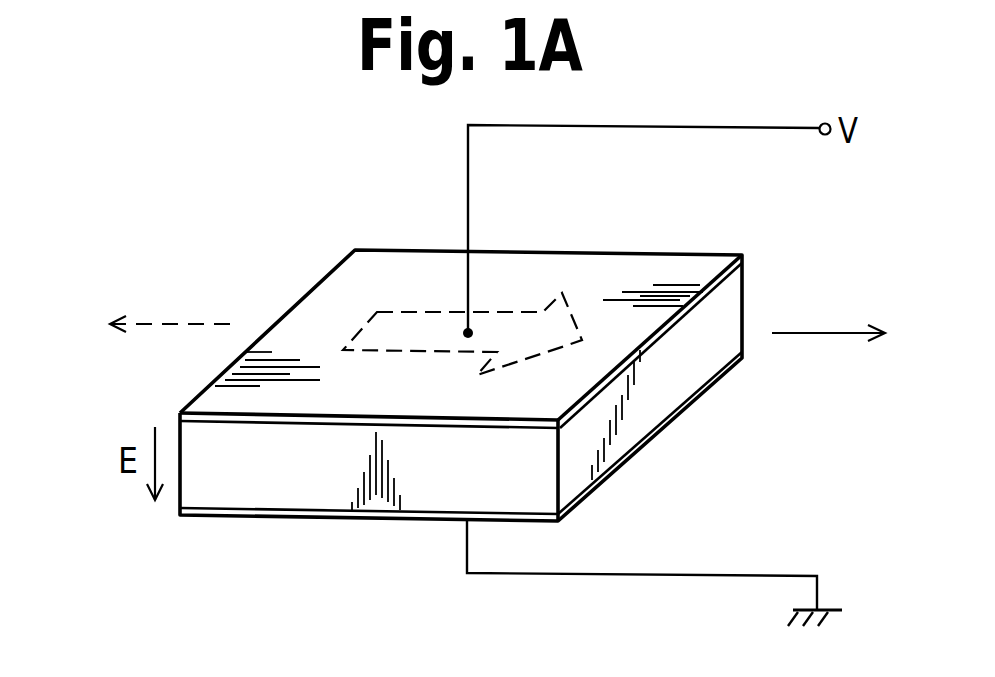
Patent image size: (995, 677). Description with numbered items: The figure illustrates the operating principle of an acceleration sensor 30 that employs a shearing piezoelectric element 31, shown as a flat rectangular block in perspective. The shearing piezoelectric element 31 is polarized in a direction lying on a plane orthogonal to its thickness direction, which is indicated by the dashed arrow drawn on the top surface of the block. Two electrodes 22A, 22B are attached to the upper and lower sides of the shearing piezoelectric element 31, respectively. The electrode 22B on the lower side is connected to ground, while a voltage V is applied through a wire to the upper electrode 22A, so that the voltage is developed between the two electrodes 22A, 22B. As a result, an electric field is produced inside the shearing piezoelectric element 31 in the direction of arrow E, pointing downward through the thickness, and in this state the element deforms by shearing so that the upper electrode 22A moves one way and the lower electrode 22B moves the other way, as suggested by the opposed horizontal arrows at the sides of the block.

The acceleration sensor 30 is at (312, 213).
The electrode 22A is at (672, 275).
The electrode 22B is at (633, 457).
The shearing piezoelectric element 31 is at (670, 375).